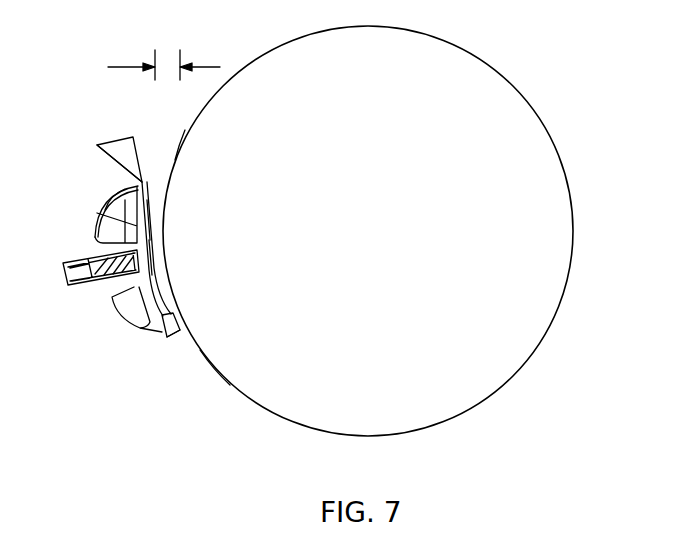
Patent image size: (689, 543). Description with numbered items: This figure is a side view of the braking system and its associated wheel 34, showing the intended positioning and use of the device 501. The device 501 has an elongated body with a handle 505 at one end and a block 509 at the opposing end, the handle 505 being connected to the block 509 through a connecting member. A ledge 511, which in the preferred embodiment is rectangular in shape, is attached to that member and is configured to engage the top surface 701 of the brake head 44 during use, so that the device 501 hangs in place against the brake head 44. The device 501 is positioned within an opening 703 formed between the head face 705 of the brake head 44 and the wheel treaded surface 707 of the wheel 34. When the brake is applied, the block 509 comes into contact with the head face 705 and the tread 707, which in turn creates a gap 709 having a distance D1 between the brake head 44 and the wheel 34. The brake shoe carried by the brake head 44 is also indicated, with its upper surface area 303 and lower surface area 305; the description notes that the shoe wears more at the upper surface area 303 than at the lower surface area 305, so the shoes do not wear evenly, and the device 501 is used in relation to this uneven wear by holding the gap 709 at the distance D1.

The wheel 34 is at (570, 278).
The distance D1 is at (110, 67).
The handle 505 is at (141, 179).
The ledge 511 is at (97, 145).
The head face 705 is at (103, 212).
The top surface 701 is at (106, 186).
The upper surface area 303 is at (158, 181).
The opening 703 is at (165, 239).
The gap 709 is at (168, 153).
The device 501 is at (200, 265).
The block 509 is at (181, 325).
The lower surface area 305 is at (192, 340).
The wheel treaded surface 707 is at (211, 382).
The brake head 44 is at (133, 328).